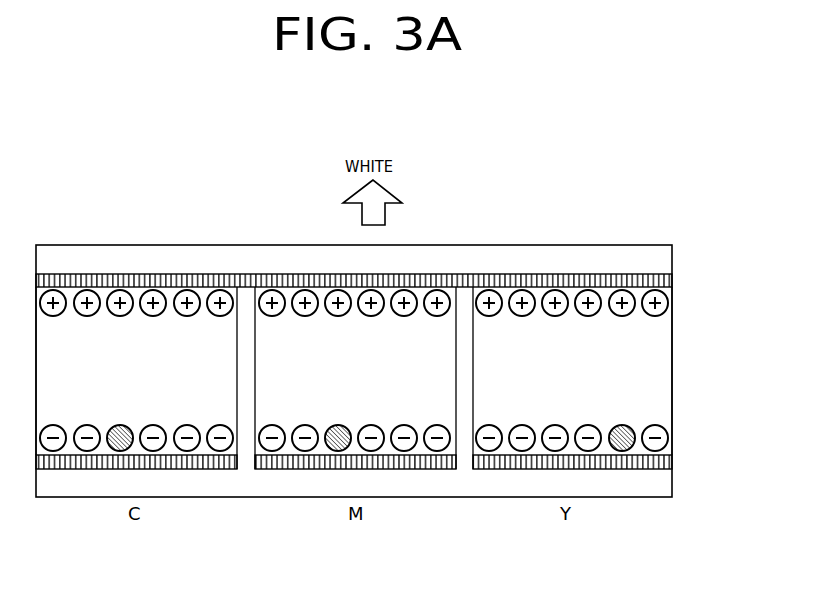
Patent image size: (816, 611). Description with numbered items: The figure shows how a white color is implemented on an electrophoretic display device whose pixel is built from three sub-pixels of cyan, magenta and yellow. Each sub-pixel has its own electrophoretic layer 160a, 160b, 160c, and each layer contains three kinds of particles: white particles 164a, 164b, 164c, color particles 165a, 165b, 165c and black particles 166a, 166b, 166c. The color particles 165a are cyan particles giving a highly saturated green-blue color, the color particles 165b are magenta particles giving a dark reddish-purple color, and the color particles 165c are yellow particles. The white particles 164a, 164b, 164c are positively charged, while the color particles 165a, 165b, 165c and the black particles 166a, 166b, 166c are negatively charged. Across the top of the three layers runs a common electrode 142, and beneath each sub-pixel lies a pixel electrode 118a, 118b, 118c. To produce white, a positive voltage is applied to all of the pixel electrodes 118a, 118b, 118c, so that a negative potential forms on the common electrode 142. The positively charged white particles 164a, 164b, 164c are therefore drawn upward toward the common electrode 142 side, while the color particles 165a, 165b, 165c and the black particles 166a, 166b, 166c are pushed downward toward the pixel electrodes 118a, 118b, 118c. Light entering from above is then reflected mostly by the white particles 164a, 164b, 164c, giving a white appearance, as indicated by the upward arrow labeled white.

The common electrode 142 is at (665, 278).
The electrophoretic layer 160a is at (67, 395).
The electrophoretic layer 160b is at (419, 395).
The electrophoretic layer 160c is at (503, 395).
The pixel electrode 118a is at (205, 463).
The pixel electrode 118b is at (369, 463).
The pixel electrode 118c is at (638, 463).
The white particles 164a is at (186, 298).
The white particles 164b is at (304, 298).
The white particles 164c is at (590, 292).
The cyan color particles 165a is at (152, 451).
The magenta color particles 165b is at (302, 451).
The yellow color particles 165c is at (588, 451).
The black particles 166a is at (118, 451).
The black particles 166b is at (334, 451).
The black particles 166c is at (620, 451).